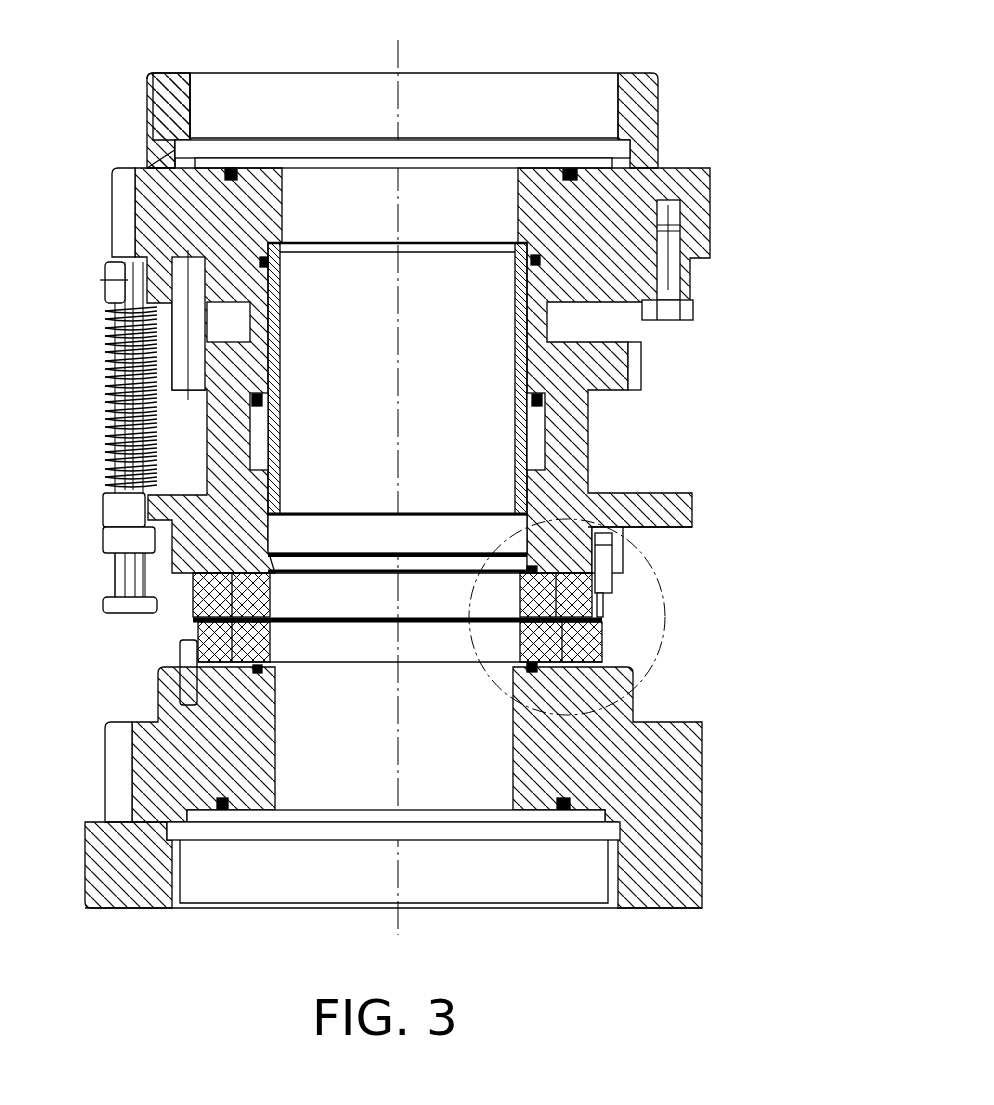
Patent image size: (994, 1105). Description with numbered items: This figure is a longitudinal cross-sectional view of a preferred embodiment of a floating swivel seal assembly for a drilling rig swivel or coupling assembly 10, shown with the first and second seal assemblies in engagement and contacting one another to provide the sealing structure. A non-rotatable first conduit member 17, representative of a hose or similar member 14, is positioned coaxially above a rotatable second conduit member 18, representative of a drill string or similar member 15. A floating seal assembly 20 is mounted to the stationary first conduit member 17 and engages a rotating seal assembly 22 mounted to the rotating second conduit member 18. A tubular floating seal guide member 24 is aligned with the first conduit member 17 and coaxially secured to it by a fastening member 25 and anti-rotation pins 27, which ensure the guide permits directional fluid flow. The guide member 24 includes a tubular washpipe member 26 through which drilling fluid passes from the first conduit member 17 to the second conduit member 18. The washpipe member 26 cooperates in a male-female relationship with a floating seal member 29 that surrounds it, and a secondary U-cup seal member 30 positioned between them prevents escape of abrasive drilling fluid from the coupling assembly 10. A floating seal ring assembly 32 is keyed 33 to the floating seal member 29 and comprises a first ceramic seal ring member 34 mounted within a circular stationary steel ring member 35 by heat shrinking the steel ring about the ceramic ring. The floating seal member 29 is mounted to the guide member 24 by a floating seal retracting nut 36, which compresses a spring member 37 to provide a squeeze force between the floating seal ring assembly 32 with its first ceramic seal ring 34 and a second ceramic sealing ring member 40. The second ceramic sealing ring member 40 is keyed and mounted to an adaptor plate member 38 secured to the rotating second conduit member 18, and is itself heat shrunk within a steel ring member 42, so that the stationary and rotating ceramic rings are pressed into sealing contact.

The swivel or coupling assembly 10 is at (700, 425).
The hose or similar member 14 is at (333, 100).
The drill string or similar member 15 is at (680, 795).
The first conduit member 17 is at (404, 105).
The second conduit member 18 is at (393, 874).
The floating seal assembly 20 is at (700, 517).
The rotating seal assembly 22 is at (632, 643).
The floating seal guide member 24 is at (693, 285).
The fastening member 25 is at (672, 311).
The washpipe member 26 is at (517, 390).
The anti-rotation pins 27 is at (185, 318).
The floating seal member 29 is at (660, 525).
The U-cup seal member 30 is at (637, 382).
The floating seal ring assembly 32 is at (605, 603).
The key 33 is at (615, 580).
The first ceramic seal ring member 34 is at (397, 587).
The stationary steel ring member 35 is at (190, 603).
The floating seal retracting nut 36 is at (107, 540).
The spring member 37 is at (107, 430).
The adaptor plate member 38 is at (670, 742).
The second ceramic sealing ring member 40 is at (117, 672).
The steel ring member 42 is at (600, 655).